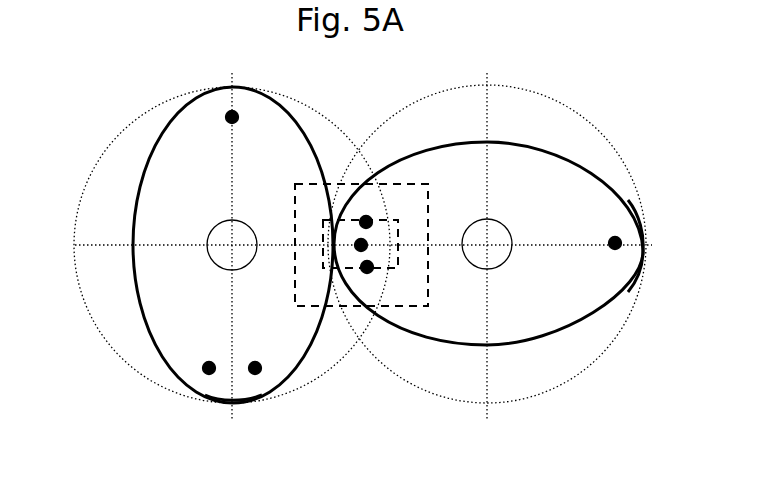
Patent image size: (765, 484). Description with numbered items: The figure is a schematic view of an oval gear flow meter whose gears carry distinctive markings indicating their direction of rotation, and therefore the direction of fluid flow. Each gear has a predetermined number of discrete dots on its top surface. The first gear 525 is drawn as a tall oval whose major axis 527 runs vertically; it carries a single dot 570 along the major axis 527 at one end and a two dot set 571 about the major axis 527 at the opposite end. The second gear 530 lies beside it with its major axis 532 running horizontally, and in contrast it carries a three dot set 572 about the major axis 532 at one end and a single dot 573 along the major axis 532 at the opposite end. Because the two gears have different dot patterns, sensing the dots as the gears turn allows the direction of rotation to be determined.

The first gear 525 is at (138, 305).
The major axis 527 is at (233, 387).
The second gear 530 is at (573, 157).
The major axis 532 is at (629, 246).
The single dot 570 is at (232, 117).
The two dot set 571 is at (205, 373).
The three dot set 572 is at (366, 274).
The single dot 573 is at (616, 240).